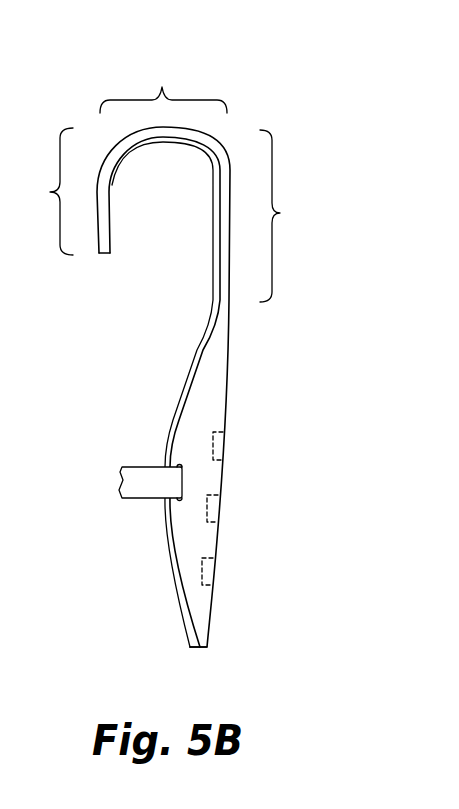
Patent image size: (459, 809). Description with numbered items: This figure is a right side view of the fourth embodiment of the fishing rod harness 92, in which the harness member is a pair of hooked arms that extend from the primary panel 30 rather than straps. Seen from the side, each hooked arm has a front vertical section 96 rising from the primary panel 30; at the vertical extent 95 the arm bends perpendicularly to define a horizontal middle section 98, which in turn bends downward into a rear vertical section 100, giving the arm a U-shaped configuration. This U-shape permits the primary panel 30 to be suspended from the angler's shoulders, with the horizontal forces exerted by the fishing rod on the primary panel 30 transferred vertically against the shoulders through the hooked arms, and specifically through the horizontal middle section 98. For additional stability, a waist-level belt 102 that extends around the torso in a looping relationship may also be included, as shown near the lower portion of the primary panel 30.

The fishing rod harness 92 is at (175, 372).
The vertical extent 95 is at (110, 142).
The horizontal middle section 98 is at (163, 85).
The rear vertical section 100 is at (37, 191).
The front vertical section 96 is at (288, 216).
The waist-level belt 102 is at (140, 490).
The primary panel 30 is at (203, 628).